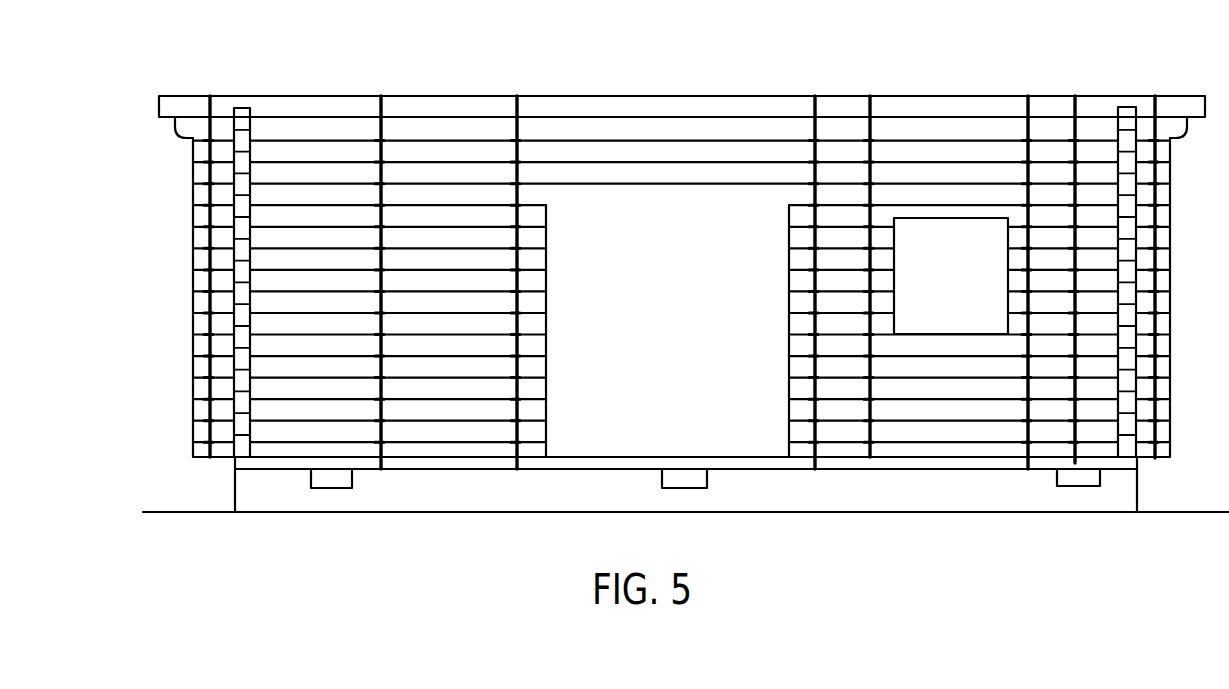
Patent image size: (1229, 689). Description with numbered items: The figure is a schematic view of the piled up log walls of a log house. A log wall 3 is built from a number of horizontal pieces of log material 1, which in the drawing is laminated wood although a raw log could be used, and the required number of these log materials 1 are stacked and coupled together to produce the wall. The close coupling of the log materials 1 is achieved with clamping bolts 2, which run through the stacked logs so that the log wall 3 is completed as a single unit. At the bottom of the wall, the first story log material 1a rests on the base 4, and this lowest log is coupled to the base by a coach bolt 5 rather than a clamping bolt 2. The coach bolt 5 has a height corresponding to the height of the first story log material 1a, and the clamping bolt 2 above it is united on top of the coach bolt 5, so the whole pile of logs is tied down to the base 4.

The log material 1 is at (958, 103).
The first story log material 1a is at (958, 443).
The clamping bolt 2 is at (1156, 282).
The log wall 3 is at (704, 97).
The base 4 is at (925, 462).
The coach bolt 5 is at (1025, 449).